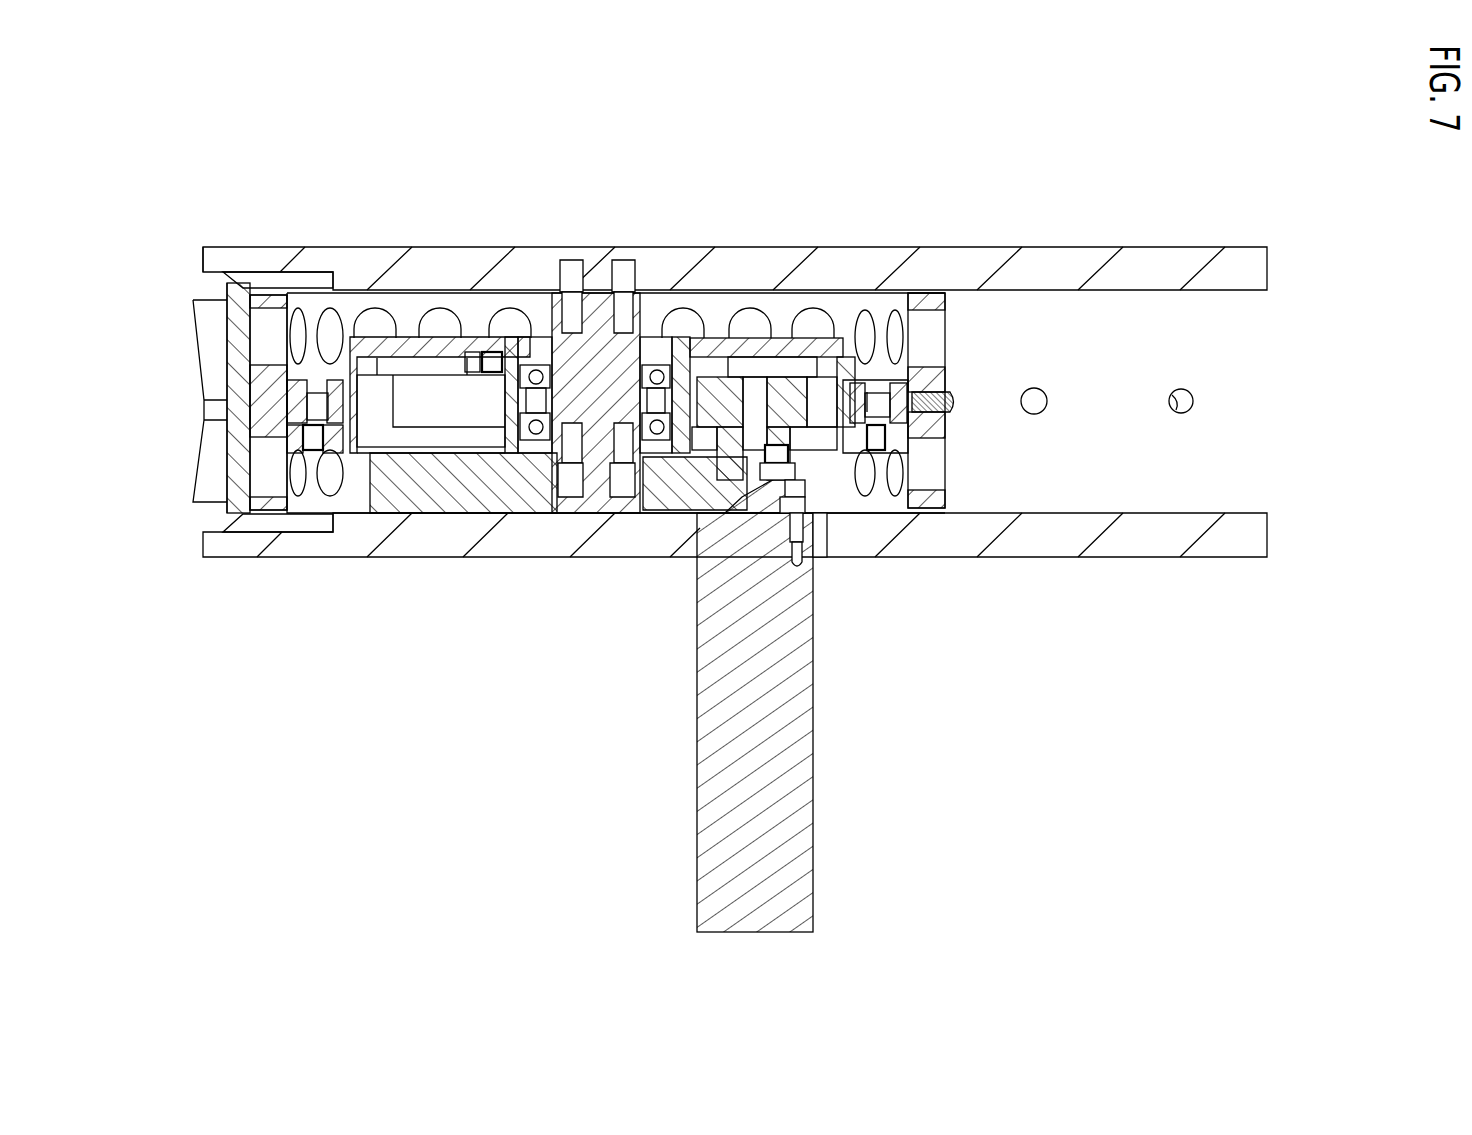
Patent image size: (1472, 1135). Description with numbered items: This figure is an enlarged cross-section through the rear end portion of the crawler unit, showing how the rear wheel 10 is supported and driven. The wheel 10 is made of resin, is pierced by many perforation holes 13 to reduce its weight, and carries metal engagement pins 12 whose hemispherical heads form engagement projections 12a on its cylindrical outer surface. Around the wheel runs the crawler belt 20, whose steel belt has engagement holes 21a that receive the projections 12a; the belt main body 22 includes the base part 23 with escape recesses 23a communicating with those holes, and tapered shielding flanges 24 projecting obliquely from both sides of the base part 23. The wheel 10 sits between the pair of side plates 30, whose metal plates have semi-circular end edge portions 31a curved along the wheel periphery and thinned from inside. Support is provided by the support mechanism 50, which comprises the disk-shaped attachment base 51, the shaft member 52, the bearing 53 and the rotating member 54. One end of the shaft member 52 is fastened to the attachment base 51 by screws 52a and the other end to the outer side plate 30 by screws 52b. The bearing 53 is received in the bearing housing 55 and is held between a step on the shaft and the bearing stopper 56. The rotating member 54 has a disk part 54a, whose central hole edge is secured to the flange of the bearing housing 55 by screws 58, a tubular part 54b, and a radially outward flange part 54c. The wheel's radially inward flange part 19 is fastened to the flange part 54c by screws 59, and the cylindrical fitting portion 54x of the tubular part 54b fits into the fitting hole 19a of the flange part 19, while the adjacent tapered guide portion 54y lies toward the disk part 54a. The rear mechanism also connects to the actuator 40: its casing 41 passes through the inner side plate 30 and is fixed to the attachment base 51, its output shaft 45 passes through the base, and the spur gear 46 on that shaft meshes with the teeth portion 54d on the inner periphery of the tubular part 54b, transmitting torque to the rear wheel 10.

The wheel 10 is at (268, 500).
The engagement pin 12 is at (927, 385).
The engagement projection 12a is at (955, 400).
The perforation hole 13 is at (740, 338).
The flange part 19 is at (852, 505).
The fitting hole 19a is at (825, 500).
The crawler belt 20 is at (224, 355).
The engagement hole 21a is at (1190, 394).
The belt main body 22 is at (224, 429).
The base part 23 is at (223, 470).
The escape recess 23a is at (1176, 414).
The shielding flange 24 is at (223, 283).
The side plate 30 is at (1129, 247).
The end edge portion 31a is at (228, 247).
The actuator 40 is at (814, 701).
The casing 41 is at (813, 797).
The output shaft 45 is at (753, 455).
The spur gear 46 is at (770, 380).
The support mechanism 50 is at (407, 330).
The attachment base 51 is at (460, 497).
The shaft member 52 is at (596, 300).
The screw 52a is at (575, 487).
The screw 52b is at (568, 275).
The bearing 53 is at (505, 390).
The rotating member 54 is at (468, 337).
The disk part 54a is at (378, 338).
The tubular part 54b is at (355, 440).
The flange part 54c is at (315, 452).
The teeth portion 54d is at (822, 383).
The fitting portion 54x is at (868, 393).
The guide portion 54y is at (845, 340).
The bearing housing 55 is at (511, 445).
The bearing stopper 56 is at (650, 330).
The screw 58 is at (478, 352).
The screw 59 is at (318, 393).